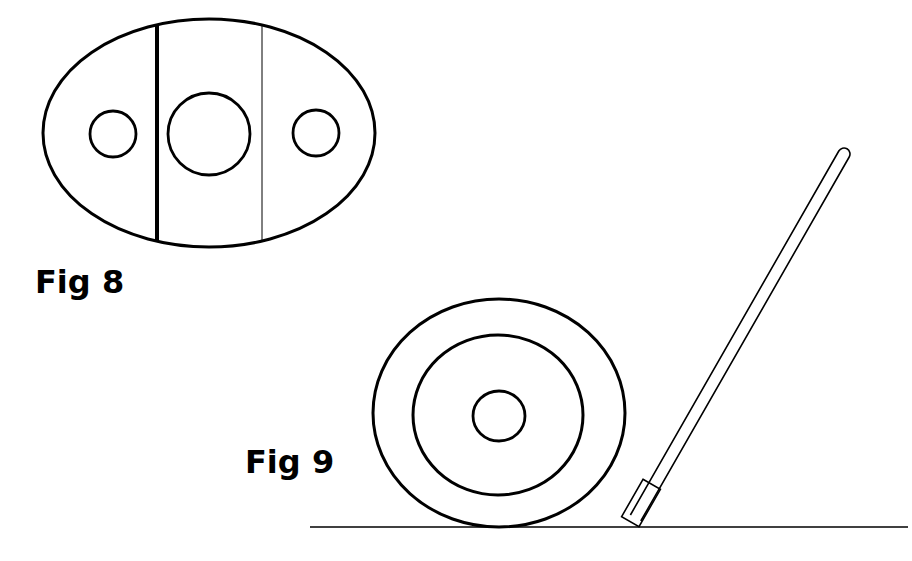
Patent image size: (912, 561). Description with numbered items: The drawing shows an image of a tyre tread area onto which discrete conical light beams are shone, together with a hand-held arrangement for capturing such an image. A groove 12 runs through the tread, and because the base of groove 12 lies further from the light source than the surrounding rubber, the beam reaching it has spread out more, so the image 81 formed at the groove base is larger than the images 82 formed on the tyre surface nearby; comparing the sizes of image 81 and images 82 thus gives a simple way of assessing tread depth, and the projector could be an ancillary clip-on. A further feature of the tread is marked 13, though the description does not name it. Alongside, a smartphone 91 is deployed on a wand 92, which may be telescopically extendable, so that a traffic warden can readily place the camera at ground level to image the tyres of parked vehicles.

In FIG. 8, the groove 12 is at (228, 201).
In FIG. 8, the wheel 13 is at (364, 79).
In FIG. 9, the wheel 13 is at (558, 339).
In FIG. 8, the image 81 is at (210, 115).
In FIG. 8, the images 82 is at (113, 133).
In FIG. 9, the smartphone 91 is at (650, 492).
In FIG. 9, the wand 92 is at (748, 322).